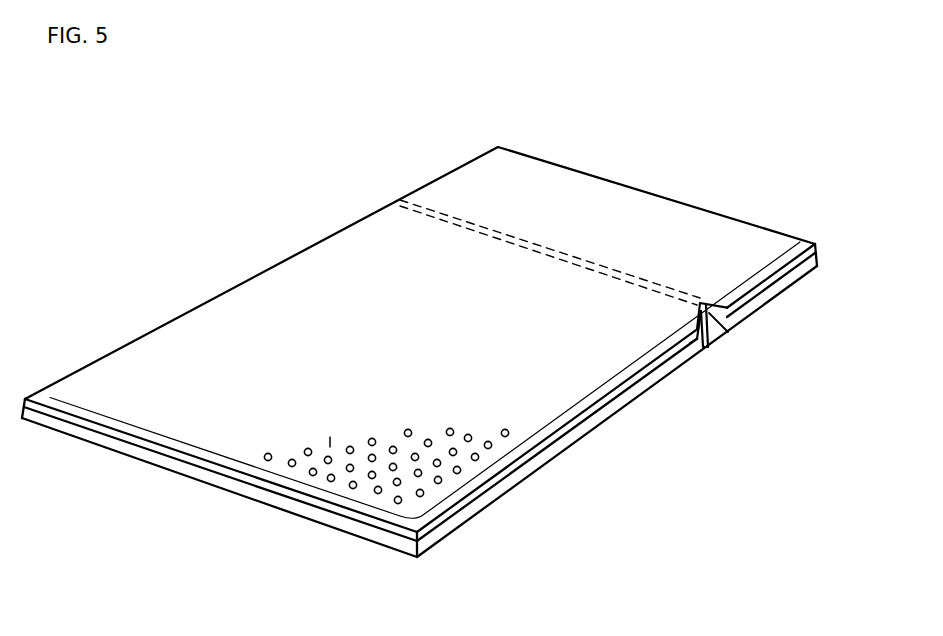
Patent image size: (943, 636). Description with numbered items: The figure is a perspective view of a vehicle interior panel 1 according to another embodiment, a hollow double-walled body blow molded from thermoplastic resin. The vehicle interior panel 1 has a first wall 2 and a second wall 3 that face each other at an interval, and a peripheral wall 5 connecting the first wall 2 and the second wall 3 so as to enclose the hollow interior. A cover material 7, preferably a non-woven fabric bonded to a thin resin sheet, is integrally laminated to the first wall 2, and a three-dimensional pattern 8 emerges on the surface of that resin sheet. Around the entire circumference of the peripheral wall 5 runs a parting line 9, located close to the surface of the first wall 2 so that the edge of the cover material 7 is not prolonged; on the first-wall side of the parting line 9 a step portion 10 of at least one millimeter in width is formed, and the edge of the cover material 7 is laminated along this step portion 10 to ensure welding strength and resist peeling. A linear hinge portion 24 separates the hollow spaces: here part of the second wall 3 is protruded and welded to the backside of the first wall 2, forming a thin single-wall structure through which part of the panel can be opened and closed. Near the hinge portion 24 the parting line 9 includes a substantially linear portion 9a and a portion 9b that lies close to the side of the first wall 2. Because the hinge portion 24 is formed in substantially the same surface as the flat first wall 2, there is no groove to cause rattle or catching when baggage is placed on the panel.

The vehicle interior panel 1 is at (283, 203).
The first wall 2 is at (372, 268).
The second wall 3 is at (232, 493).
The peripheral wall 5 is at (583, 440).
The cover material 7 is at (330, 440).
The three-dimensional pattern 8 is at (441, 466).
The parting line 9 is at (572, 436).
The substantially linear portion 9a is at (678, 350).
The portion 9b is at (710, 330).
The step portion 10 is at (623, 393).
The hinge portion 24 is at (713, 333).